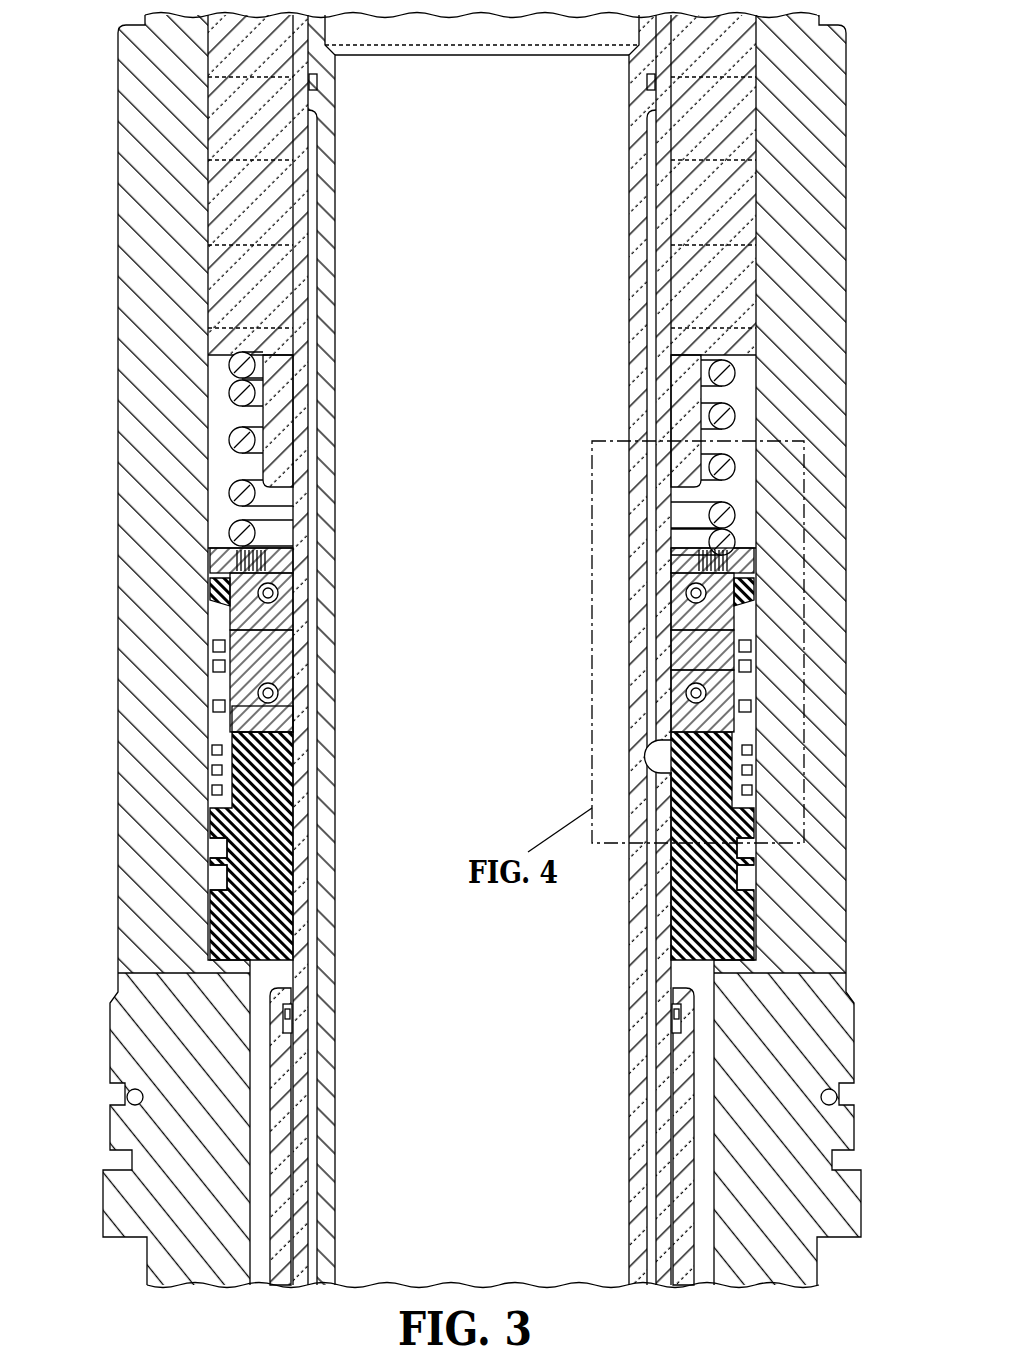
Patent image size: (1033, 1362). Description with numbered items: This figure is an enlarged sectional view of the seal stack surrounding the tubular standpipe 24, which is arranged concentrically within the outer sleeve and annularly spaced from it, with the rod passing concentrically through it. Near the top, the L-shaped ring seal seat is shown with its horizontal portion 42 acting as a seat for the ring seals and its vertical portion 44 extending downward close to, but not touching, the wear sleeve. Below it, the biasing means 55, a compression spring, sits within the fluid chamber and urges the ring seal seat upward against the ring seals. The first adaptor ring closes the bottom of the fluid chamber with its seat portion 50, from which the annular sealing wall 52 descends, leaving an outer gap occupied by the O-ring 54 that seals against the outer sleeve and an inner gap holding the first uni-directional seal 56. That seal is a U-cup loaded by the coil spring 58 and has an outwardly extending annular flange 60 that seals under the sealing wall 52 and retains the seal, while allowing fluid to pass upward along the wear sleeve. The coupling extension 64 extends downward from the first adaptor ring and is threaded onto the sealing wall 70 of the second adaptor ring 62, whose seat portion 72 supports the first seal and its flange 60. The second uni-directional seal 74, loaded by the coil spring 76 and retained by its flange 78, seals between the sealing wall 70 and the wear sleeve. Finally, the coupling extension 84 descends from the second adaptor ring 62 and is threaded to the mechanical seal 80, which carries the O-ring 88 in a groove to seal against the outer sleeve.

The tubular standpipe 24 is at (322, 494).
The horizontal portion 42 is at (760, 340).
The vertical portion 44 is at (690, 390).
The biasing means 55 is at (710, 415).
The seat portion 50 is at (740, 565).
The annular sealing wall 52 is at (722, 610).
The first uni-directional seal 56 is at (730, 633).
The second adaptor ring 62 is at (725, 652).
The seat portion 72 is at (693, 655).
The O-ring 54 is at (217, 597).
The coil spring 58 is at (262, 603).
The annular flange 60 is at (227, 627).
The coupling extension 64 is at (223, 687).
The sealing wall 70 is at (240, 717).
The coil spring 76 is at (262, 695).
The second uni-directional seal 74 is at (272, 722).
The flange 78 is at (253, 728).
The coupling extension 84 is at (217, 786).
The mechanical seal 80 is at (223, 835).
The O-ring 88 is at (218, 878).